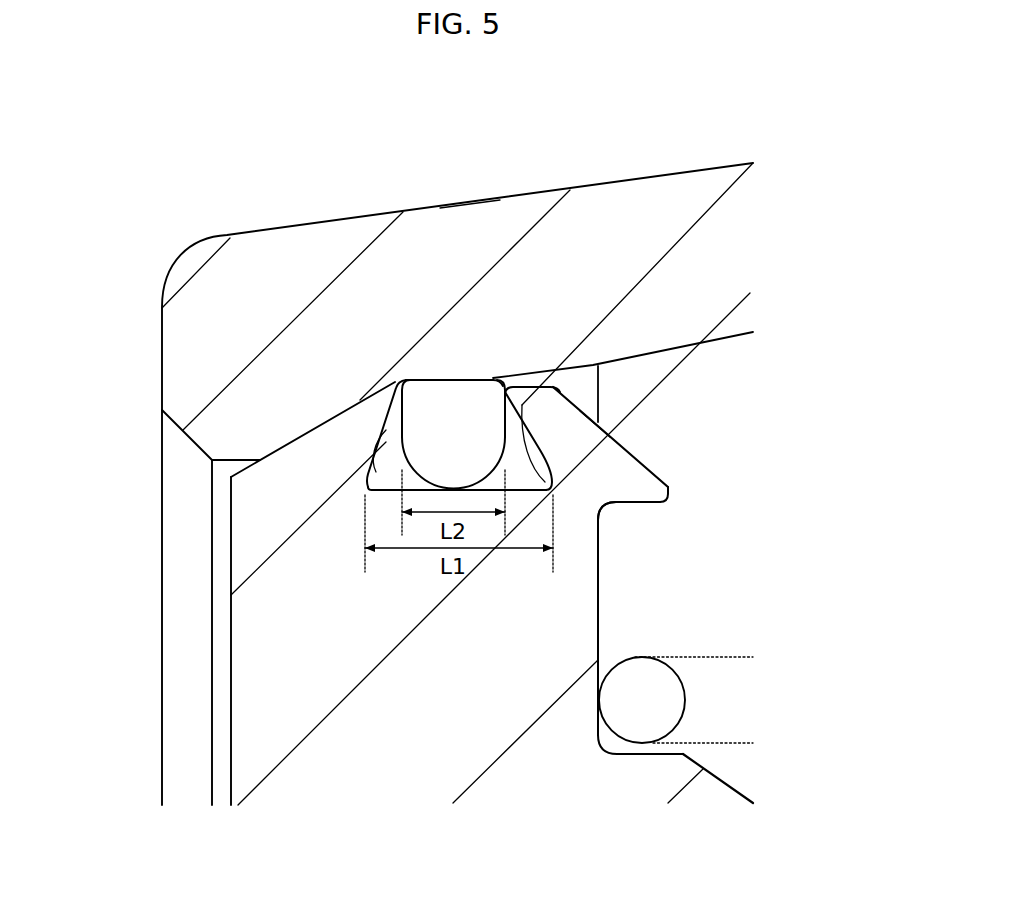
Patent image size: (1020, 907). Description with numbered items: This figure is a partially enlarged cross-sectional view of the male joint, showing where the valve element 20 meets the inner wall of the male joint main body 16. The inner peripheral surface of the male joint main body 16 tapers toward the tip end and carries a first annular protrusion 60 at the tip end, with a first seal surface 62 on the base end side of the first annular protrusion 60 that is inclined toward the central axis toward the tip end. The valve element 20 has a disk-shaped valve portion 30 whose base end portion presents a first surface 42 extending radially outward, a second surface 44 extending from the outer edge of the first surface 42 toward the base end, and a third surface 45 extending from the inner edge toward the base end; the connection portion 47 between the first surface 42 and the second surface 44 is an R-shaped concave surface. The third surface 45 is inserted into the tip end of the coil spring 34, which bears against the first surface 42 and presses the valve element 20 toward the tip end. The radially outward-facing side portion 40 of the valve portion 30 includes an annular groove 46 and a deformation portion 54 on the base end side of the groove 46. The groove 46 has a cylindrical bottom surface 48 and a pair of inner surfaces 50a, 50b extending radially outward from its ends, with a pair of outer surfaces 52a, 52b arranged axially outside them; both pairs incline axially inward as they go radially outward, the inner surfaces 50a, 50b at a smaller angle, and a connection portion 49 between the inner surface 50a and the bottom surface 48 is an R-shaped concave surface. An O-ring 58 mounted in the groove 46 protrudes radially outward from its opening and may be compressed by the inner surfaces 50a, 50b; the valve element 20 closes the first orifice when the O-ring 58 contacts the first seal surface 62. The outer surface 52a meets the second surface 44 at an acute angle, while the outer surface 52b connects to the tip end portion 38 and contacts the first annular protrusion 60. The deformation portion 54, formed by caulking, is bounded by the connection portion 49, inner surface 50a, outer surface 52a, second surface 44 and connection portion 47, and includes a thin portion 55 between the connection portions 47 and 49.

The male joint main body 16 is at (470, 240).
The valve element 20 is at (271, 657).
The valve portion 30 is at (387, 715).
The coil spring 34 is at (708, 655).
The tip end portion 38 is at (232, 770).
The side portion 40 is at (523, 388).
The first surface 42 is at (600, 583).
The second surface 44 is at (640, 506).
The third surface 45 is at (650, 740).
The groove 46 is at (468, 396).
The connection portion 47 is at (605, 508).
The bottom surface 48 is at (490, 382).
The connection portion 49 is at (613, 455).
The inner surface 50a is at (570, 402).
The inner surface 50b is at (370, 432).
The outer surface 52a is at (643, 458).
The outer surface 52b is at (307, 433).
The deformation portion 54 is at (618, 442).
The thin portion 55 is at (595, 495).
The O-ring 58 is at (443, 417).
The first annular protrusion 60 is at (223, 463).
The first seal surface 62 is at (594, 418).